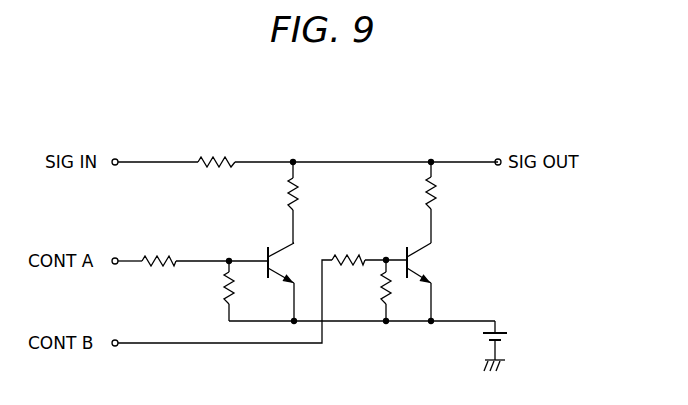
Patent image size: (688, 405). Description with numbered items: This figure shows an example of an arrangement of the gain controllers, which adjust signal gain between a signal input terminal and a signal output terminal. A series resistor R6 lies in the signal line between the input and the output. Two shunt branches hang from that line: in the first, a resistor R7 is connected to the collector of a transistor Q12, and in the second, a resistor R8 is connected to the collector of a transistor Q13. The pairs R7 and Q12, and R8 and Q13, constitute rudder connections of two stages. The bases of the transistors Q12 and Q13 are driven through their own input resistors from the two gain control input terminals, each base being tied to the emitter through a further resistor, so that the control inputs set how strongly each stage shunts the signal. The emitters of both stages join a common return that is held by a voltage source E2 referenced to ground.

The resistor R6 is at (221, 153).
The resistor R7 is at (298, 197).
The resistor R8 is at (435, 195).
The transistor Q12 is at (283, 262).
The transistor Q13 is at (423, 263).
The battery / voltage source E2 is at (510, 337).